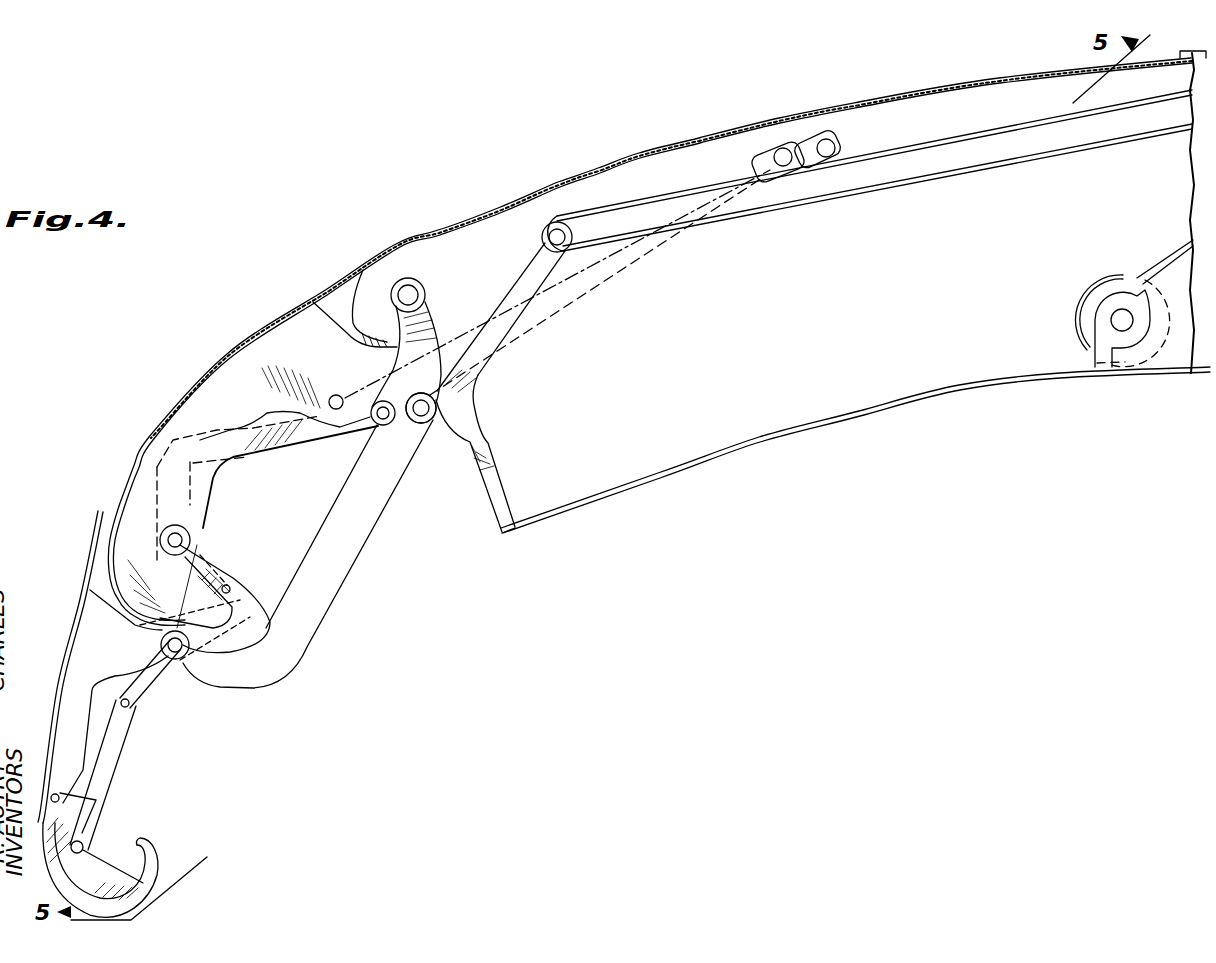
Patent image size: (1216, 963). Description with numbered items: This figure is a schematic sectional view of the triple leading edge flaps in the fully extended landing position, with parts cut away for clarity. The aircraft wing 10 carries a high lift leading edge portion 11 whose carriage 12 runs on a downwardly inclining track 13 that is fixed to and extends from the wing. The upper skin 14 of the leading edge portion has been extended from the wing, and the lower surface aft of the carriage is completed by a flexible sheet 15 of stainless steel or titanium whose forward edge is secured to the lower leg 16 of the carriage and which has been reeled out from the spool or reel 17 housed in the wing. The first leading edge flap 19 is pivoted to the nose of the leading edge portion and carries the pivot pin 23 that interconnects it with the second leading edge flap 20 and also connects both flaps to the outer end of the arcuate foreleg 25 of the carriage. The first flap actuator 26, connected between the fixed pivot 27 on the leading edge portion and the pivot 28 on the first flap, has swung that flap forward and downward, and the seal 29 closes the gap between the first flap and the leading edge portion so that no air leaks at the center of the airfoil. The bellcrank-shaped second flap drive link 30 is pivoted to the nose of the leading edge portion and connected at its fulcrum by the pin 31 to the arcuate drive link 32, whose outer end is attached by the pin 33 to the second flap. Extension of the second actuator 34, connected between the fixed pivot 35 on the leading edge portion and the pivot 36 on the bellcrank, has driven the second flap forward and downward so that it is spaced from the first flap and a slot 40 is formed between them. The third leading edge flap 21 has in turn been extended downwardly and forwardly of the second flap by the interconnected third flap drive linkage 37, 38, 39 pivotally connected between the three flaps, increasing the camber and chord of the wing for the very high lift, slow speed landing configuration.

The aircraft wing 10 is at (1190, 48).
The high lift leading edge portion 11 is at (576, 170).
The carriage 12 is at (468, 418).
The track 13 is at (943, 136).
The upper skin 14 is at (990, 80).
The flexible sheet 15 is at (694, 467).
The lower leg 16 is at (490, 452).
The spool or reel 17 is at (1097, 290).
The first leading edge flap 19 is at (312, 355).
The second leading edge flap 20 is at (104, 659).
The third leading edge flap 21 is at (92, 885).
The pivot pin 23 is at (192, 541).
The arcuate foreleg 25 is at (300, 430).
The first flap actuator 26 is at (460, 332).
The fixed pivot 27 is at (826, 138).
The pivot 28 is at (340, 395).
The seal 29 is at (392, 327).
The second flap drive link 30 is at (438, 352).
The pin 31 is at (424, 424).
The arcuate drive link 32 is at (332, 591).
The pin 33 is at (178, 660).
The second actuator 34 is at (585, 285).
The fixed pivot 35 is at (781, 148).
The pivot 36 is at (378, 425).
The third flap drive linkage 37 is at (108, 765).
The third flap drive linkage 38 is at (148, 690).
The third flap drive linkage 39 is at (205, 519).
The slot 40 is at (113, 498).